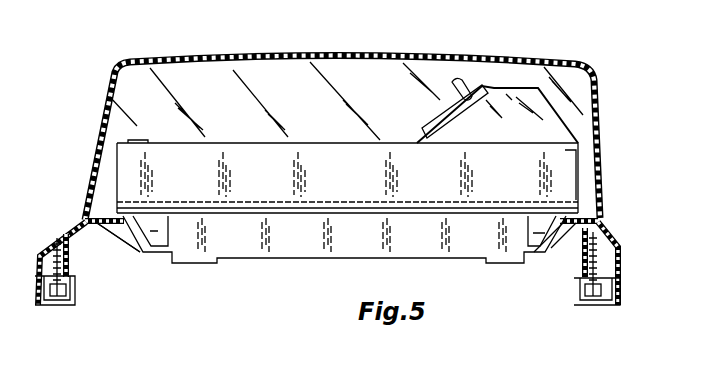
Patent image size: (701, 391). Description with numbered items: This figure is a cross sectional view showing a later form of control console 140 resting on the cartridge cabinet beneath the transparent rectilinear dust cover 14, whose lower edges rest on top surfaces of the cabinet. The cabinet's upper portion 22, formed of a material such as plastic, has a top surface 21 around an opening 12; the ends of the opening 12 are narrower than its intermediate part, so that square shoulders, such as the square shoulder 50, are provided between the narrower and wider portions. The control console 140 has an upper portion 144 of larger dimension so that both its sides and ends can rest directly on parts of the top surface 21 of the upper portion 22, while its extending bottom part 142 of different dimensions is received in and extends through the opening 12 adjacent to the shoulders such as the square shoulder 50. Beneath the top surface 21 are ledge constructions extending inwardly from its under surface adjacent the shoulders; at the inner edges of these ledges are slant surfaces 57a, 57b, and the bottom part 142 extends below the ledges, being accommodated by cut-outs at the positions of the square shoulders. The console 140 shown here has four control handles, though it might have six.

The transparent rectilinear dust cover 14 is at (462, 52).
The control console 140 is at (516, 92).
The upper portion of the module 144 is at (563, 173).
The bottom part 142 is at (251, 251).
The opening 12 is at (148, 213).
The square shoulder 50 is at (152, 232).
The top surface 21 is at (88, 223).
The upper portion 22 is at (619, 253).
The slant surface 57a is at (583, 230).
The slant surface 57b is at (138, 238).